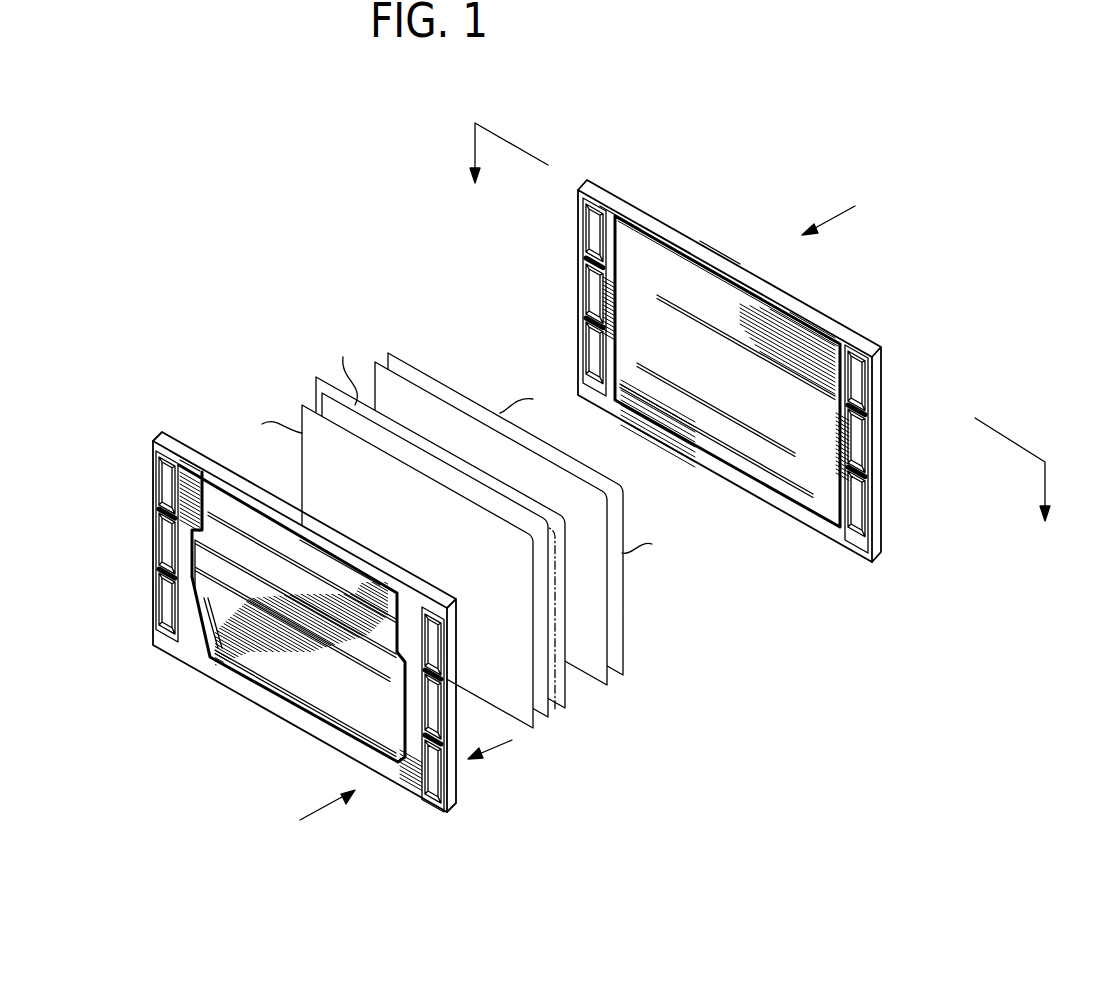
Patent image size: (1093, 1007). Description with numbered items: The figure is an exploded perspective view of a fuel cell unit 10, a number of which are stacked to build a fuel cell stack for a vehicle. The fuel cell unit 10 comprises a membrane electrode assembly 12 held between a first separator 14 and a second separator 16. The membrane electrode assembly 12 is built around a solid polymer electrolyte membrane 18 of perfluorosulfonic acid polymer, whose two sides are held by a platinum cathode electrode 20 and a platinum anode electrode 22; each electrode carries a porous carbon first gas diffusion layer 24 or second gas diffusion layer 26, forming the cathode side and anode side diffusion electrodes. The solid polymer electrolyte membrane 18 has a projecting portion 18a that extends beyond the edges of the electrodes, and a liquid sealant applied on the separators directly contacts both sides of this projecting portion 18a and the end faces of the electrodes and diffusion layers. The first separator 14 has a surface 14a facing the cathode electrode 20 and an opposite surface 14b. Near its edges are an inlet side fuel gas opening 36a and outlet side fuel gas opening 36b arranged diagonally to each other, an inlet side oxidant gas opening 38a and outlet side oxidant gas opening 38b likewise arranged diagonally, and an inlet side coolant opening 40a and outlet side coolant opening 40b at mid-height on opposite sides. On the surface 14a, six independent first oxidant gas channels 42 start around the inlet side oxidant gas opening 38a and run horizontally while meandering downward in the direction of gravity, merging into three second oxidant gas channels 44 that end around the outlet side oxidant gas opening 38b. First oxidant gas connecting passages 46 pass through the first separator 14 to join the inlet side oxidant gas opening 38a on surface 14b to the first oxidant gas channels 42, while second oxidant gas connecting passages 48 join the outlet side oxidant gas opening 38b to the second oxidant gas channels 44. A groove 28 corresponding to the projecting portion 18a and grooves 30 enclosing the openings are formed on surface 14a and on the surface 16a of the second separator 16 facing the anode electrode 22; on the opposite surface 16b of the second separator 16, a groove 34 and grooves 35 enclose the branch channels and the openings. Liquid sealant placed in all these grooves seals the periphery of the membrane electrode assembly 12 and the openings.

The fuel cell unit 10 is at (350, 243).
The membrane electrode assembly 12 is at (345, 318).
The first separator 14 is at (607, 183).
The surface 14a is at (665, 235).
The surface 14b is at (714, 262).
The second separator 16 is at (153, 441).
The surface 16a is at (343, 566).
The surface 16b is at (185, 463).
The solid polymer electrolyte membrane 18 is at (512, 561).
The projecting portion 18a is at (565, 586).
The cathode electrode 20 is at (428, 405).
The anode electrode 22 is at (542, 720).
The first gas diffusion layer 24 is at (470, 408).
The second gas diffusion layer 26 is at (522, 729).
The groove 28 is at (826, 340).
The grooves 30 is at (583, 192).
The groove 34 is at (268, 717).
The grooves 35 is at (153, 445).
The inlet side fuel gas opening 36a is at (590, 219).
The outlet side fuel gas opening 36b is at (868, 518).
The inlet side oxidant gas opening 38a is at (868, 401).
The outlet side oxidant gas opening 38b is at (590, 351).
The inlet side coolant opening 40a is at (590, 281).
The outlet side coolant opening 40b is at (865, 463).
The first oxidant gas channels 42 is at (746, 300).
The second oxidant gas channels 44 is at (665, 418).
The first oxidant gas connecting passages 46 is at (866, 328).
The second oxidant gas connecting passages 48 is at (630, 396).